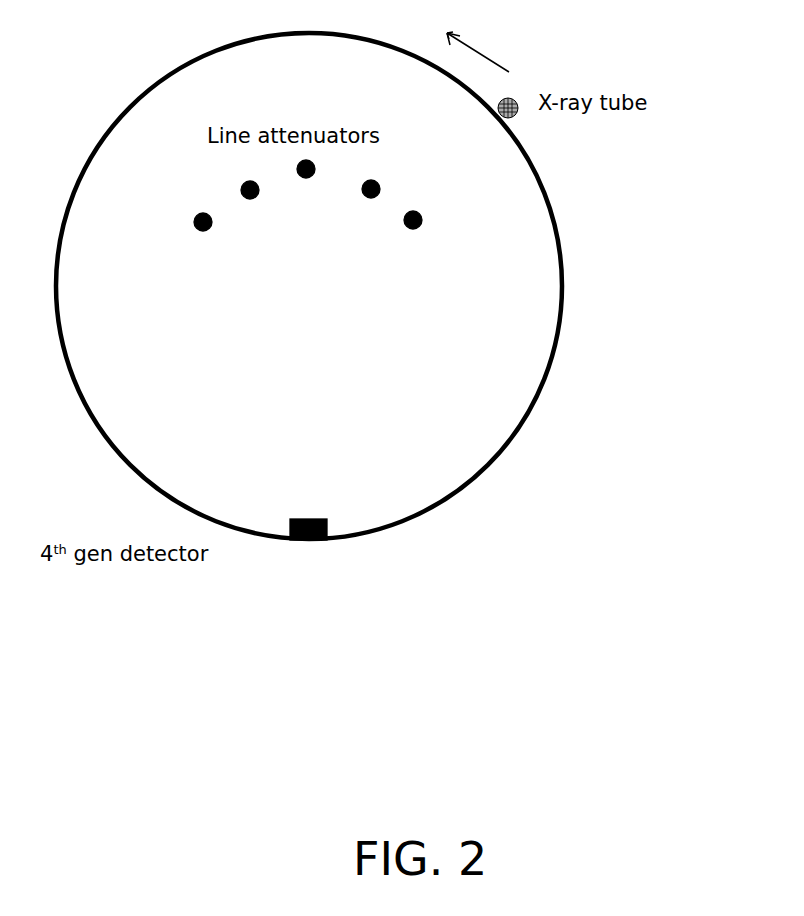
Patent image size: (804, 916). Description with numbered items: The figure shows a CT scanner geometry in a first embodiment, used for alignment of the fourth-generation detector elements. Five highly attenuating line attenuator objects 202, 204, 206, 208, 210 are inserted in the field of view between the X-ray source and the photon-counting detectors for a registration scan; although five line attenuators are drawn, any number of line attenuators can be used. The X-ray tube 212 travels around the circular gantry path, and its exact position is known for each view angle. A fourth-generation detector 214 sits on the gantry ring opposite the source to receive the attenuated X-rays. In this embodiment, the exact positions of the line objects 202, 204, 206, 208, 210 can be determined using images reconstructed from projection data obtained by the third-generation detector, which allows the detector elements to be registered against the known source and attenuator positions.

The line attenuator object 202 is at (203, 231).
The line attenuator object 204 is at (240, 186).
The line attenuator object 206 is at (306, 178).
The line attenuator object 208 is at (368, 178).
The line attenuator object 210 is at (415, 228).
The X-ray tube 212 is at (510, 117).
The 4th generation detector 214 is at (308, 542).